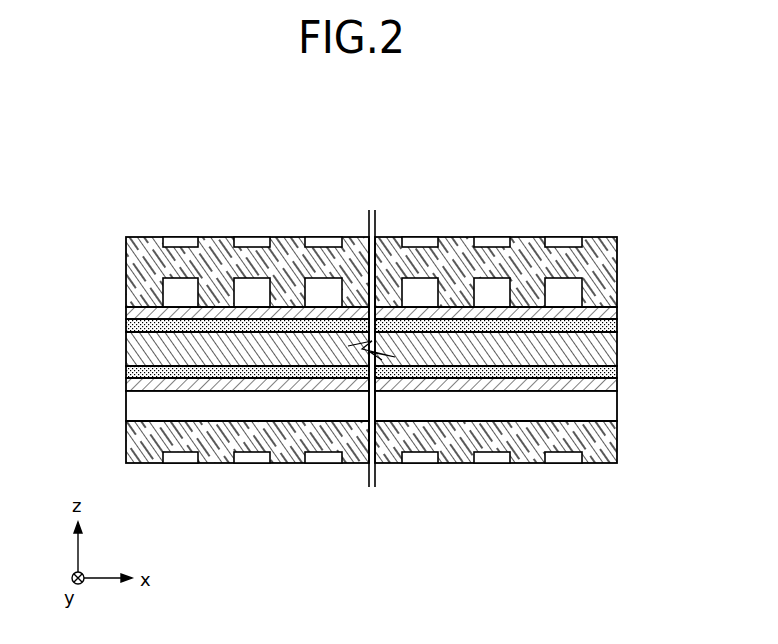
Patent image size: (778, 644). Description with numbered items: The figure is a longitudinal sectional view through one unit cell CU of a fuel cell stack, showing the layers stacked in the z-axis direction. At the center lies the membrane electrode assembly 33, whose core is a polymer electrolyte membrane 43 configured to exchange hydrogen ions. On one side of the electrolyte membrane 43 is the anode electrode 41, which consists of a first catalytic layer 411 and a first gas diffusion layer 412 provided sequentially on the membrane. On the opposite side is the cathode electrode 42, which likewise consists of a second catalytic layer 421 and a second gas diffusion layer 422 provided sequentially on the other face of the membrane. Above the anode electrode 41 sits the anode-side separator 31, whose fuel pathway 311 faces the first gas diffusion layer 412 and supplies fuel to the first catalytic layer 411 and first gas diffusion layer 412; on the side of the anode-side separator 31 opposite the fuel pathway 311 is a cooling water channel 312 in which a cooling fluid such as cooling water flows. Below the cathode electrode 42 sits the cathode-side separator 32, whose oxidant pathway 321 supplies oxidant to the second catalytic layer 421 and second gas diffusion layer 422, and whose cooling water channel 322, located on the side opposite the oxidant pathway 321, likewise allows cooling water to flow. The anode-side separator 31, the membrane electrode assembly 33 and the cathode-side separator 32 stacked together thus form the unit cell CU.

The anode-side separator 31 is at (395, 244).
The fuel pathway 311 is at (563, 292).
The cooling water channel 312 is at (490, 242).
The cathode-side separator 32 is at (395, 454).
The oxidant pathway 321 is at (563, 406).
The cooling water channel 322 is at (490, 457).
The membrane electrode assembly 33 is at (334, 350).
The anode electrode 41 is at (323, 320).
The first catalytic layer 411 is at (126, 325).
The first gas diffusion layer 412 is at (126, 313).
The cathode electrode 42 is at (323, 379).
The second catalytic layer 421 is at (126, 372).
The second gas diffusion layer 422 is at (126, 385).
The polymer electrolyte membrane 43 is at (126, 341).
The unit cell CU is at (633, 212).